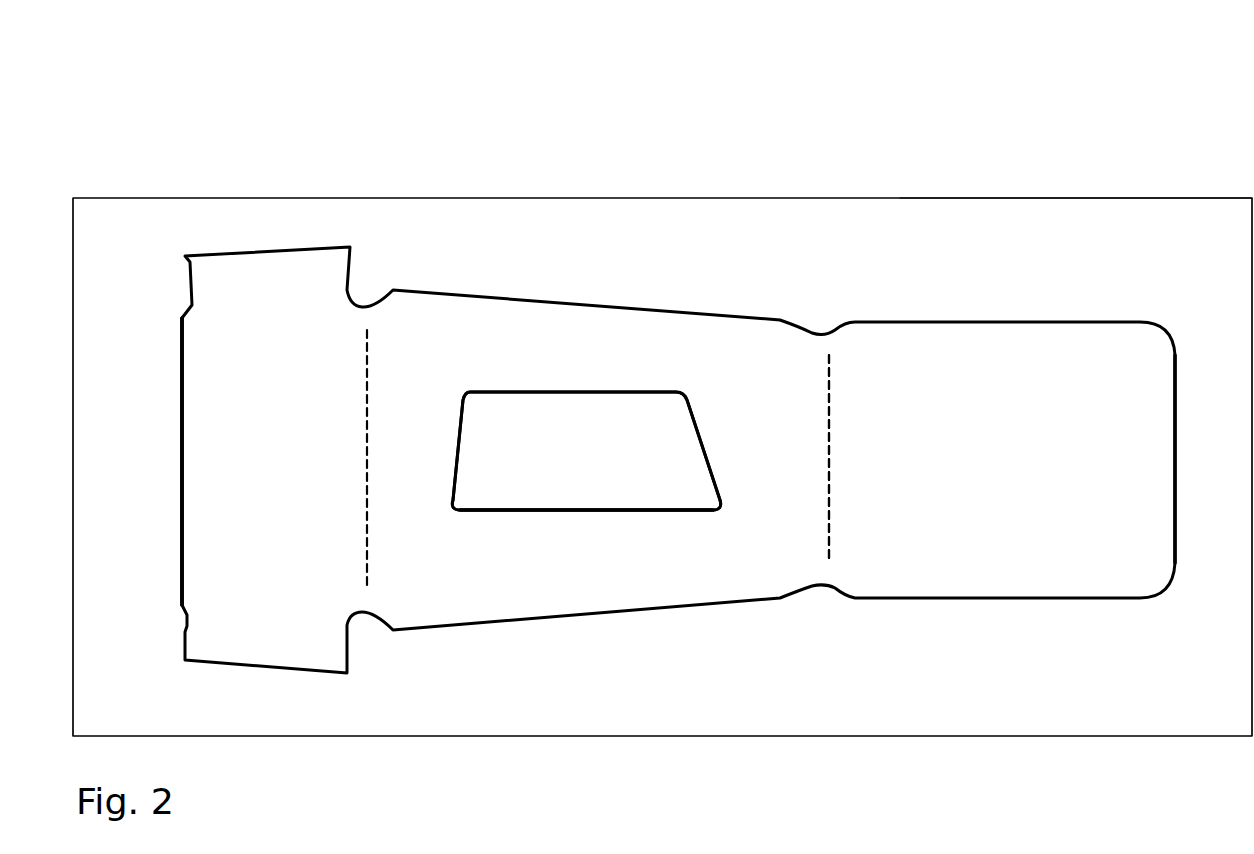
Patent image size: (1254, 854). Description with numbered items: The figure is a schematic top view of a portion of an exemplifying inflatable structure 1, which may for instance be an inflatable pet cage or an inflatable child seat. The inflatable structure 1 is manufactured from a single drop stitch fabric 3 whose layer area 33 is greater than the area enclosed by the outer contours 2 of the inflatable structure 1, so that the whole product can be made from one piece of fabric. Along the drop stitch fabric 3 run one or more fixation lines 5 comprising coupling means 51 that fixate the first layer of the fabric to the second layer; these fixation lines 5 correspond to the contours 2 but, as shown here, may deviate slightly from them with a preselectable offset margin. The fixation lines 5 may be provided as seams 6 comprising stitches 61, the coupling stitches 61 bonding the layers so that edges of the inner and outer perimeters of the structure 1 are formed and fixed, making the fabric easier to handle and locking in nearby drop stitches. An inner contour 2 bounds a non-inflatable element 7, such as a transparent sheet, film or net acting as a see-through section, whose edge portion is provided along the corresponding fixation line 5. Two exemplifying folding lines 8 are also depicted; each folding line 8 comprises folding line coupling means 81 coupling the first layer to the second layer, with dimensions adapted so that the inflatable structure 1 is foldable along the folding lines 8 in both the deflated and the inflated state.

The inflatable structure 1 is at (254, 153).
The contours 2 is at (425, 274).
The drop stitch fabric 3 is at (1056, 179).
The layer area 33 is at (1078, 225).
The fixation lines 5 is at (200, 500).
The seams 6 is at (1155, 485).
The non-inflatable element 7 is at (640, 499).
The folding lines 8 is at (384, 500).
The coupling means 51 is at (187, 370).
The stitches 61 is at (222, 405).
The folding line coupling means 81 is at (829, 422).